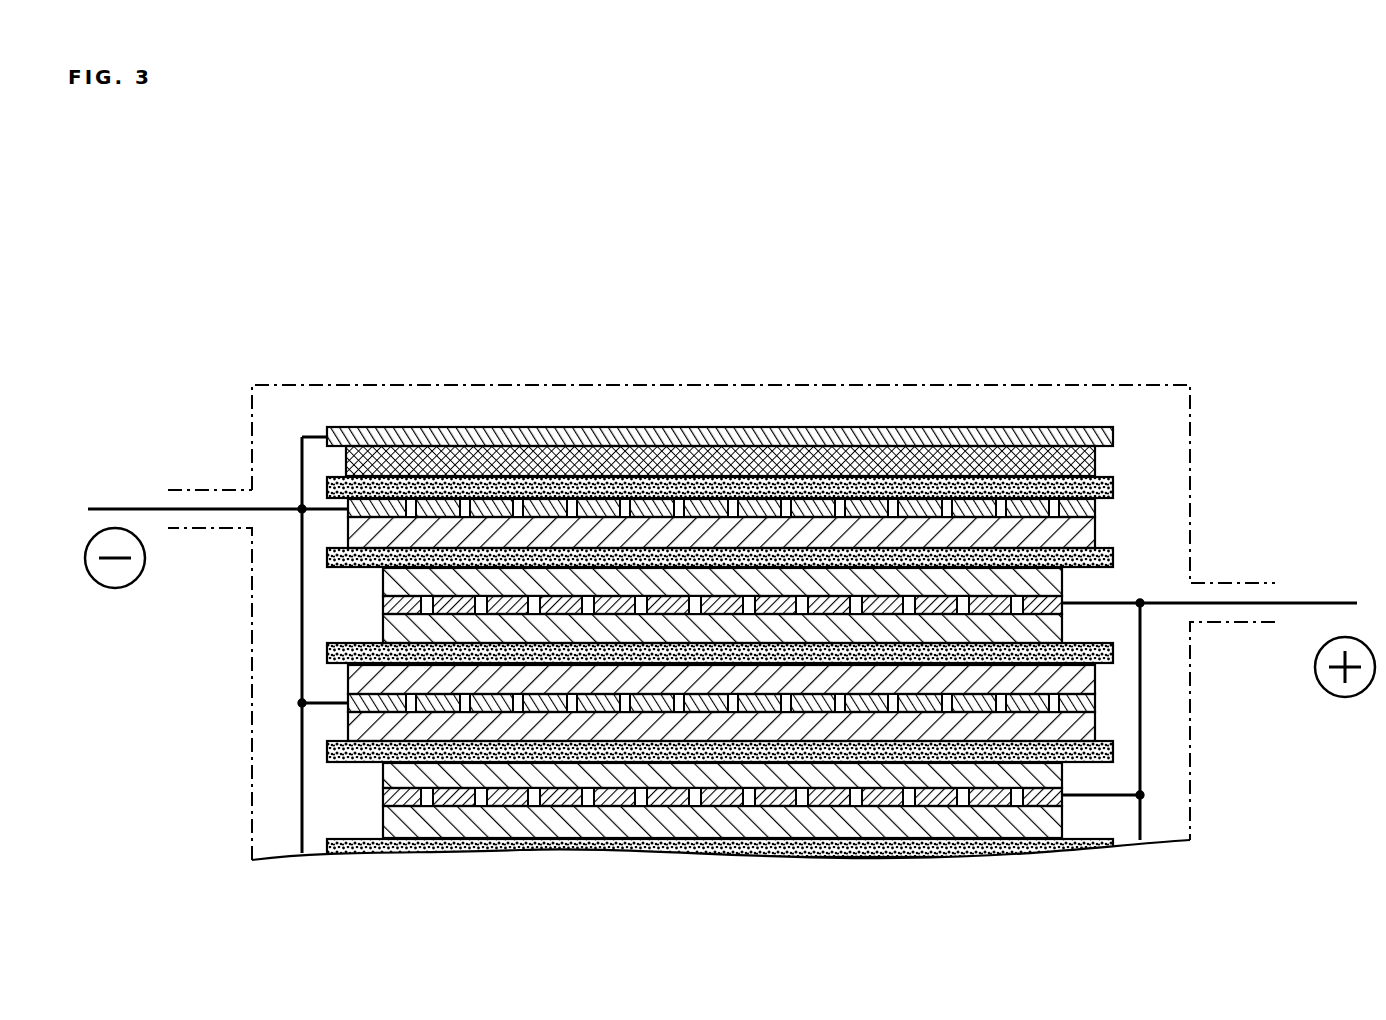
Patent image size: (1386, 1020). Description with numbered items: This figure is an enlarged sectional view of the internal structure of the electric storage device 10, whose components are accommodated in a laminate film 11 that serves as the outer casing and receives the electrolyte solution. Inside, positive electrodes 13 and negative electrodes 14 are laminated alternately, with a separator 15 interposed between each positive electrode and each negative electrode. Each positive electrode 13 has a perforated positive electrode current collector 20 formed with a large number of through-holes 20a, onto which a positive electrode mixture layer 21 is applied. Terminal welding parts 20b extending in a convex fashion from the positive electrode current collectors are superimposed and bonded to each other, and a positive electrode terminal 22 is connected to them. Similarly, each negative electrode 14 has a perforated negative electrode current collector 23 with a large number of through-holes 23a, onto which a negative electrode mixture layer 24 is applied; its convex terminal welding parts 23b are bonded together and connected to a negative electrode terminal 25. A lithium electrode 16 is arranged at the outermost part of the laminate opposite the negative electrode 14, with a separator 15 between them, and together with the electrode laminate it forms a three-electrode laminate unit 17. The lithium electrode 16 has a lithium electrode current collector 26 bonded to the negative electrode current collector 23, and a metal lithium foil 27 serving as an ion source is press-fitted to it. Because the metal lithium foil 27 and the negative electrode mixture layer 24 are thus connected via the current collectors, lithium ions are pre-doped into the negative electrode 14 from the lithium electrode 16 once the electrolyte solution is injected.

The electric storage device 10 is at (993, 324).
The laminate film 11 is at (360, 382).
The positive electrode 13 is at (691, 616).
The negative electrode 14 is at (745, 620).
The separator 15 is at (1113, 488).
The lithium electrode 16 is at (720, 386).
The three-electrode laminate unit 17 is at (786, 399).
The positive electrode current collector 20 is at (383, 606).
The through-holes 20a is at (749, 596).
The terminal welding parts 20b is at (1102, 602).
The positive electrode mixture layer 21 is at (383, 584).
The positive electrode terminal 22 is at (1325, 602).
The negative electrode current collector 23 is at (1095, 507).
The through-holes 23a is at (518, 499).
The terminal welding parts 23b is at (337, 513).
The negative electrode mixture layer 24 is at (1095, 530).
The negative electrode terminal 25 is at (122, 507).
The lithium electrode current collector 26 is at (1078, 427).
The metal lithium foil 27 is at (1043, 446).